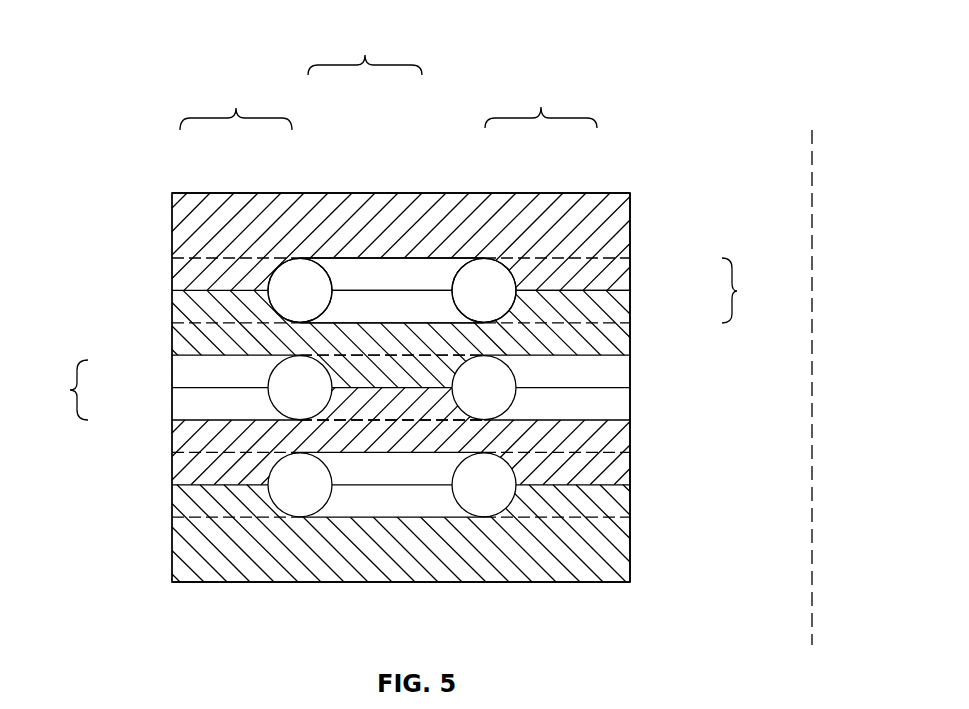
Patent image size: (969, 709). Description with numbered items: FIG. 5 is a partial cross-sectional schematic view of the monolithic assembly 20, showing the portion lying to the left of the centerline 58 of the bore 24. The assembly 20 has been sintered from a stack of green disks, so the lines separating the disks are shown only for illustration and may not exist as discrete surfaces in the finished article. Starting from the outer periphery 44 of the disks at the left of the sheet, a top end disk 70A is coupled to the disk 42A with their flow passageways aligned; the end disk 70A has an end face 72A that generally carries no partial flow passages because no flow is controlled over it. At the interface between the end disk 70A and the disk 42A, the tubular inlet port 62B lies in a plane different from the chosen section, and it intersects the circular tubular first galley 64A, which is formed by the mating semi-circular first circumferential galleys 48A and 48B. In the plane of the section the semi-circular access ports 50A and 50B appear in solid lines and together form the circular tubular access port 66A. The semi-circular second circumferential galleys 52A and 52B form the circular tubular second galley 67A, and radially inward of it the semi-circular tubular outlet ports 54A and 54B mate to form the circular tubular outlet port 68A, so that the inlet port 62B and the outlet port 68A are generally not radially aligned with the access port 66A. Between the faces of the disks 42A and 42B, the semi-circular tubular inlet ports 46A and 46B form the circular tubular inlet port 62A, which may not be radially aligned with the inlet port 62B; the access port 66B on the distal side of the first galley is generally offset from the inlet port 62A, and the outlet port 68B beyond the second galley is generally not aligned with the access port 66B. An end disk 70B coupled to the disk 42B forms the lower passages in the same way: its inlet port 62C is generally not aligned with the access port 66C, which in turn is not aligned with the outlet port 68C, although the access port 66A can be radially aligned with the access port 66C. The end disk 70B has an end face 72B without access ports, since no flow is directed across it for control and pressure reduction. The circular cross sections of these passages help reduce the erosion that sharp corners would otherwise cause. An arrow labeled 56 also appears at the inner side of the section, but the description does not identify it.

The monolithic assembly 20 is at (157, 130).
The bore 24 is at (747, 423).
The disk 42A is at (180, 345).
The disk 42B is at (180, 438).
The outer periphery 44 is at (172, 208).
The semi-circular tubular inlet port 46A is at (178, 360).
The semi-circular tubular inlet port 46B is at (178, 417).
The semi-circular first circumferential galley 48A is at (302, 267).
The semi-circular first circumferential galley 48B is at (292, 303).
The semi-circular access port 50A is at (423, 270).
The semi-circular access port 50B is at (413, 308).
The semi-circular second circumferential galley 52A is at (483, 267).
The semi-circular second circumferential galley 52B is at (493, 305).
The semi-circular tubular outlet port 54A is at (623, 265).
The semi-circular tubular outlet port 54B is at (623, 315).
The side wall 56 is at (631, 437).
The centerline 58 is at (813, 280).
The circular tubular inlet port 62A is at (324, 390).
The tubular inlet port 62B is at (180, 277).
The inlet port 62C is at (180, 472).
The circular tubular first galley 64A is at (256, 200).
The circular tubular access port 66A is at (392, 174).
The access port 66B is at (382, 410).
The access port 66C is at (427, 500).
The circular tubular second galley 67A is at (524, 200).
The circular tubular outlet port 68A is at (756, 290).
The outlet port 68B is at (623, 373).
The outlet port 68C is at (623, 500).
The top end disk 70A is at (180, 243).
The end disk 70B is at (180, 550).
The end face 72A is at (193, 193).
The end face 72B is at (220, 582).